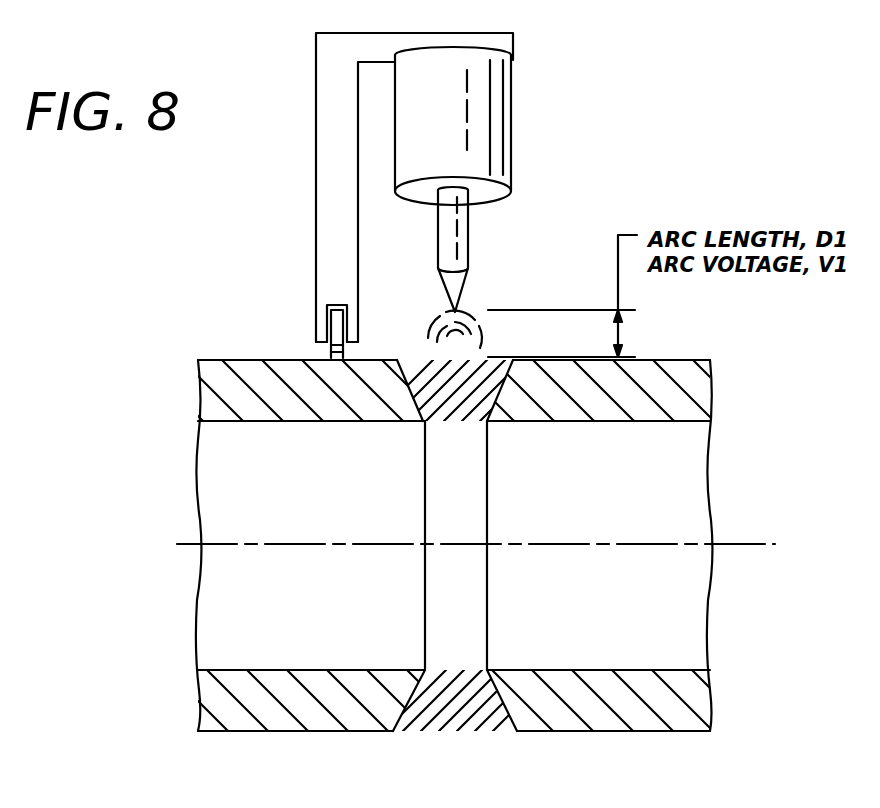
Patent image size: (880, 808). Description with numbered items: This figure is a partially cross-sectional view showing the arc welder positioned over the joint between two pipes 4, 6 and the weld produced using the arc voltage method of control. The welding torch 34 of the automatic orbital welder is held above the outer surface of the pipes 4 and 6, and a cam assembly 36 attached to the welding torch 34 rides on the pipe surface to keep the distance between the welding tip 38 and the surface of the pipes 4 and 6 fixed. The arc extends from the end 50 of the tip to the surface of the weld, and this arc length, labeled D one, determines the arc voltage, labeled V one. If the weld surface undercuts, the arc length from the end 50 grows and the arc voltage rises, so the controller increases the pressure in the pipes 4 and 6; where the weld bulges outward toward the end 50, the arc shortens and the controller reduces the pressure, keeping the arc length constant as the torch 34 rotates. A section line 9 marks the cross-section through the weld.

The pipe 4 is at (198, 382).
The pipe 6 is at (695, 400).
The section line 9- 9 is at (450, 337).
The welding torch 34 is at (502, 123).
The cam assembly 36 is at (316, 252).
The tip 38 is at (470, 237).
The end 50 is at (458, 316).